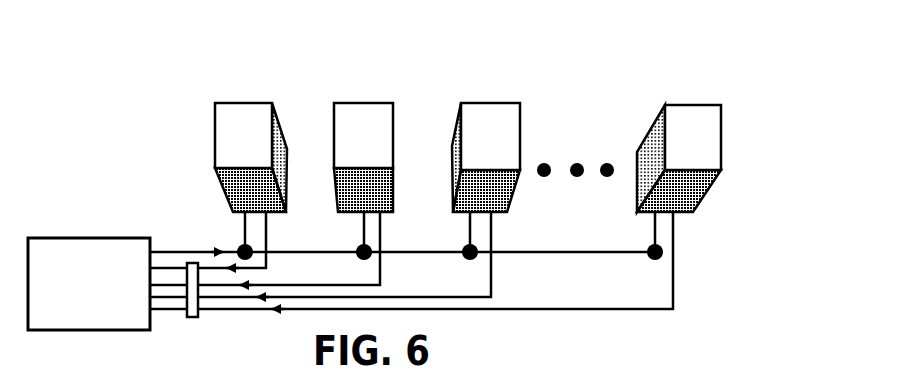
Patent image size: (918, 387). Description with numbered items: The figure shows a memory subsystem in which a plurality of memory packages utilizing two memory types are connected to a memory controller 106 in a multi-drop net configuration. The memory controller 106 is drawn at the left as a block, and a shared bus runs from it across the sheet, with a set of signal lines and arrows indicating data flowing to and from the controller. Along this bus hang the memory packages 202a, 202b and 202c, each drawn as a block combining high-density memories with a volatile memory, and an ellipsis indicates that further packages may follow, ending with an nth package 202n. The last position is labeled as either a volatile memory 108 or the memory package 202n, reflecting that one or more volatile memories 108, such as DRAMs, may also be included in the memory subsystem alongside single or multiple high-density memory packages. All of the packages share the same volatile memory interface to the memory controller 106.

The memory controller 106 is at (89, 284).
The memory package utilizing two memory types 202a is at (214, 104).
The memory package utilizing two memory types 202b is at (380, 103).
The memory package utilizing two memory types 202c is at (503, 103).
The memory package utilizing two memory types 202n is at (724, 118).
The volatile memory 108 is at (738, 140).